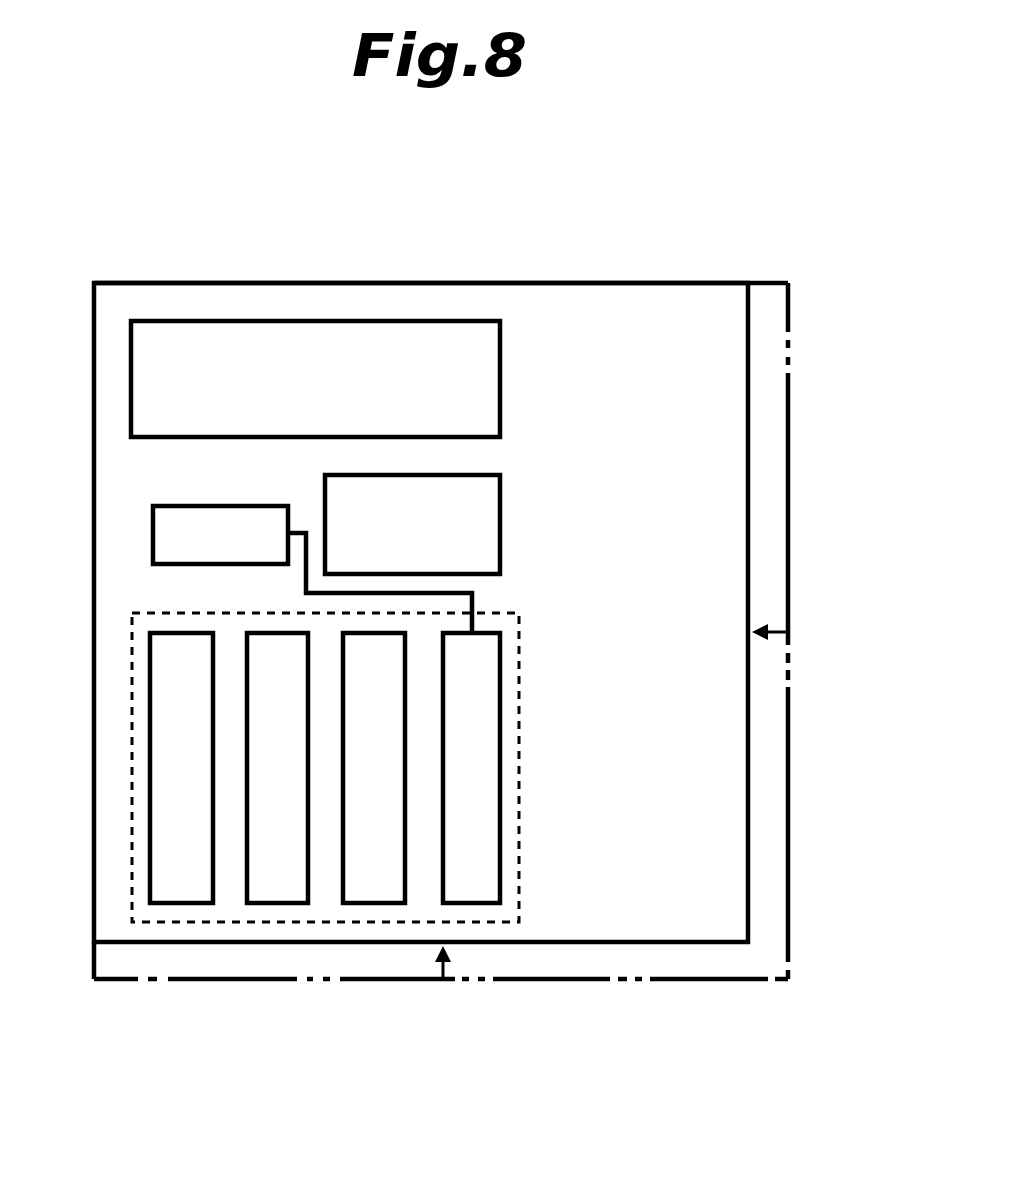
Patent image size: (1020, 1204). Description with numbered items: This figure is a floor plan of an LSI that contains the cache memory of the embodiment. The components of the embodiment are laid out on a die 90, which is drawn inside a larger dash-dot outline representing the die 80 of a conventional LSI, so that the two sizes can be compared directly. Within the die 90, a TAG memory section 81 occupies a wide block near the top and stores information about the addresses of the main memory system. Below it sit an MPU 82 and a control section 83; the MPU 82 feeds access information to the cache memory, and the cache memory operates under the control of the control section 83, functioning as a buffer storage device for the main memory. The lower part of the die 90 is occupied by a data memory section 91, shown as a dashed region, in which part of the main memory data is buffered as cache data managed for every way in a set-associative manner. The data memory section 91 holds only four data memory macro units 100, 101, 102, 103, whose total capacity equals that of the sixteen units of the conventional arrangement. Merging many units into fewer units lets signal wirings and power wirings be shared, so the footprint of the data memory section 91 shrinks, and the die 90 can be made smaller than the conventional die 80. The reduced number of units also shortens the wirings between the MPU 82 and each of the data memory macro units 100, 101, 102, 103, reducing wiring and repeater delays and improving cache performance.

The die 80 is at (789, 390).
The TAG memory section 81 is at (501, 372).
The MPU 82 is at (208, 505).
The control section 83 is at (501, 517).
The die 90 is at (128, 282).
The data memory section 91 is at (520, 672).
The data memory macro unit 100 is at (456, 742).
The data memory macro unit 101 is at (360, 905).
The data memory macro unit 102 is at (262, 905).
The data memory macro unit 103 is at (162, 905).